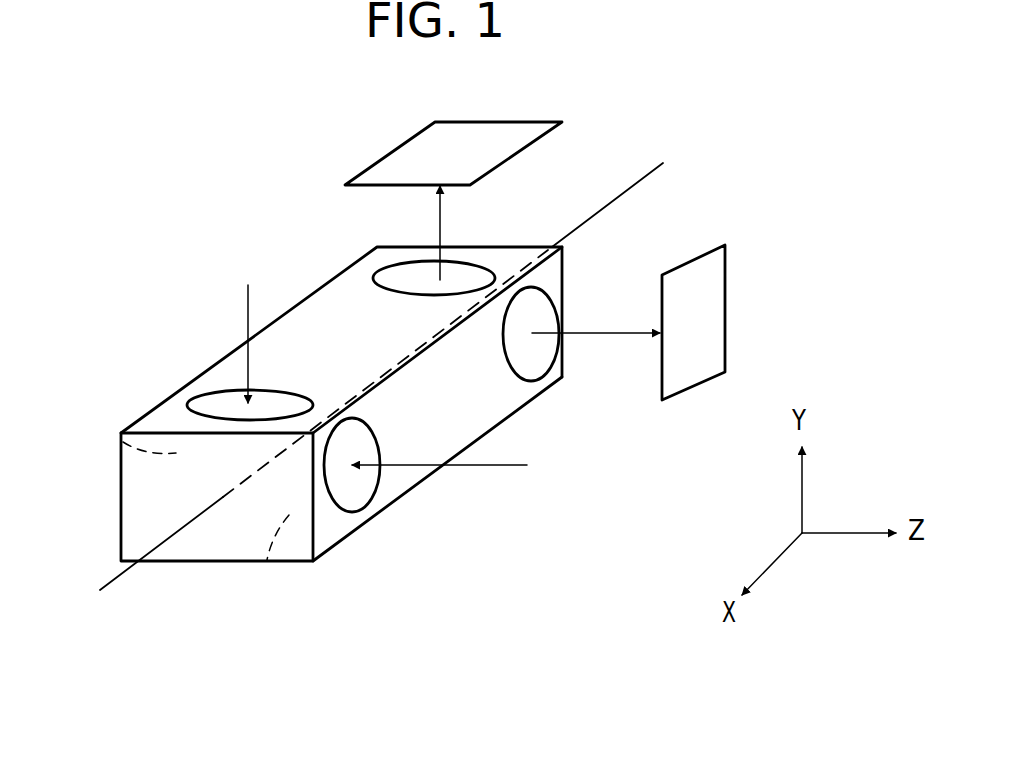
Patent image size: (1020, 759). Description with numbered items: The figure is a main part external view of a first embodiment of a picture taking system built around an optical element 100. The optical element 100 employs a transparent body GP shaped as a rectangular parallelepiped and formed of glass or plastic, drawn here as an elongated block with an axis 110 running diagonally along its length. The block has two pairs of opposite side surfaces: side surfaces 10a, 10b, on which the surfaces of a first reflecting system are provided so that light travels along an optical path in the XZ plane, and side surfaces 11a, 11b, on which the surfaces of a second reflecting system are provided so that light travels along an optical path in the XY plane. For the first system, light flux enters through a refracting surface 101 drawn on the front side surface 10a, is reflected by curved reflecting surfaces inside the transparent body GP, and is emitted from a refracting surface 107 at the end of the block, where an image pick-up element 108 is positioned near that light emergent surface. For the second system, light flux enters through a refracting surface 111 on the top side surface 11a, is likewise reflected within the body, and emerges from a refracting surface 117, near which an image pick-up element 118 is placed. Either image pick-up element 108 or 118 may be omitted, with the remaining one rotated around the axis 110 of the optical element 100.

The optical element 100 is at (120, 507).
The side surface 10a is at (477, 417).
The side surface 10b is at (130, 448).
The side surface 11a is at (328, 307).
The side surface 11b is at (267, 561).
The refracting surface 101 is at (365, 490).
The refracting surface 107 is at (533, 362).
The image pick-up element 108 is at (708, 303).
The axis 110 is at (623, 192).
The transparent body GP is at (519, 250).
The refracting surface 111 is at (202, 403).
The refracting surface 117 is at (395, 275).
The image pick-up element 118 is at (405, 158).